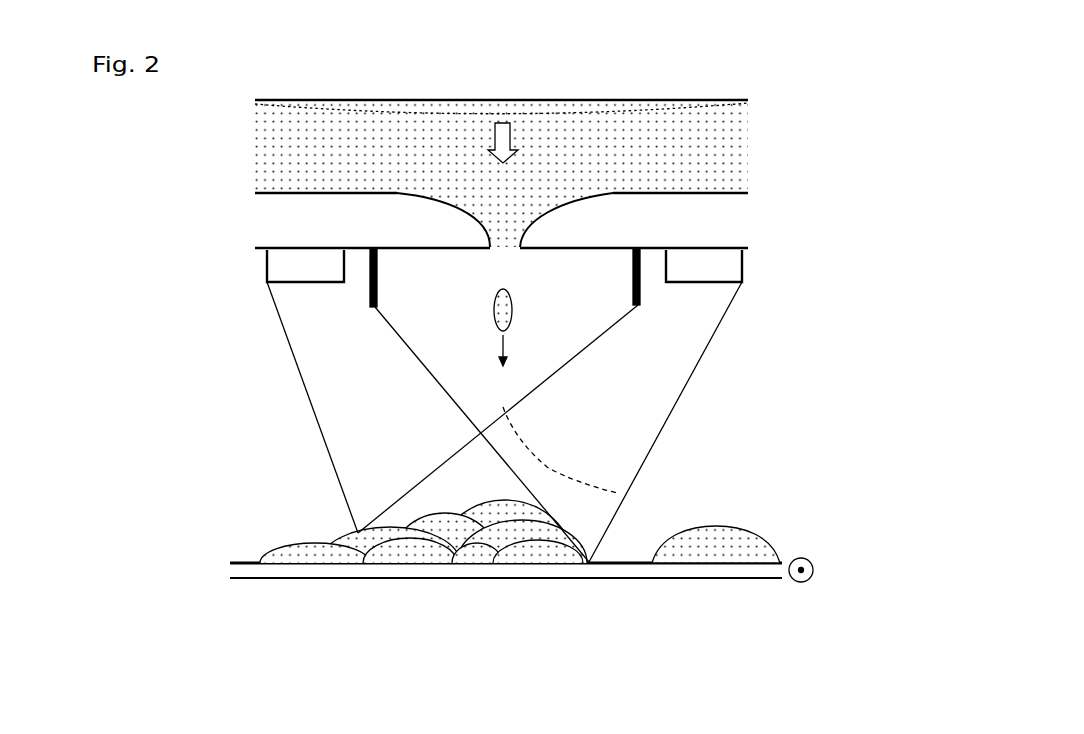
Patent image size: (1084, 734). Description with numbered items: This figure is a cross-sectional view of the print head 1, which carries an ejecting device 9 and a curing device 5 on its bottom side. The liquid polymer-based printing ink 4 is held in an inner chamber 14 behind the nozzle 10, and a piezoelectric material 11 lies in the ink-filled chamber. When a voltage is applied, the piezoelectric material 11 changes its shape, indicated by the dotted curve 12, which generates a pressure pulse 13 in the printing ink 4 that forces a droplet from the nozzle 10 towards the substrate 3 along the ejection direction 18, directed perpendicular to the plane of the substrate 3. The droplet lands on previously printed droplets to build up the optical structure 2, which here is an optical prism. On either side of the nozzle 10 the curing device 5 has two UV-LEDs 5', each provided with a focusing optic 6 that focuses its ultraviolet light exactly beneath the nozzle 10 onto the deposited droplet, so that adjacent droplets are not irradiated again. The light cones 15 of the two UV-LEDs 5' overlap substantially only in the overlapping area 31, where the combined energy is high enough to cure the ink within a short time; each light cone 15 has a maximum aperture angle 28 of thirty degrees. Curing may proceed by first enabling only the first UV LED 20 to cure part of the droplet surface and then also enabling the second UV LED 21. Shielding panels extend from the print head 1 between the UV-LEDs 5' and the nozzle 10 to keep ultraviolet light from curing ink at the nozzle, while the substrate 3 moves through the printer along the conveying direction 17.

The print head 1 is at (556, 65).
The ejecting device 9 is at (779, 130).
The printing ink 4 is at (501, 151).
The inner chamber 14 is at (327, 137).
The piezoelectric material 11 is at (680, 100).
The dotted curve 12 is at (490, 113).
The pressure pulse 13 is at (507, 142).
The ejecting nozzle 10 is at (490, 240).
The curing device 5 is at (219, 289).
The UV-LED 5' is at (219, 289).
The focusing optic 6 is at (322, 272).
The first UV LED 20 is at (219, 289).
The second UV LED 21 is at (735, 266).
The optical structure 2 is at (370, 510).
The overlapping area 31 is at (597, 583).
The substrate 3 is at (628, 562).
The ejection direction 18 is at (503, 347).
The light cone 15 is at (430, 417).
The maximum aperture angle 28 is at (597, 482).
The conveying direction 17 is at (814, 569).